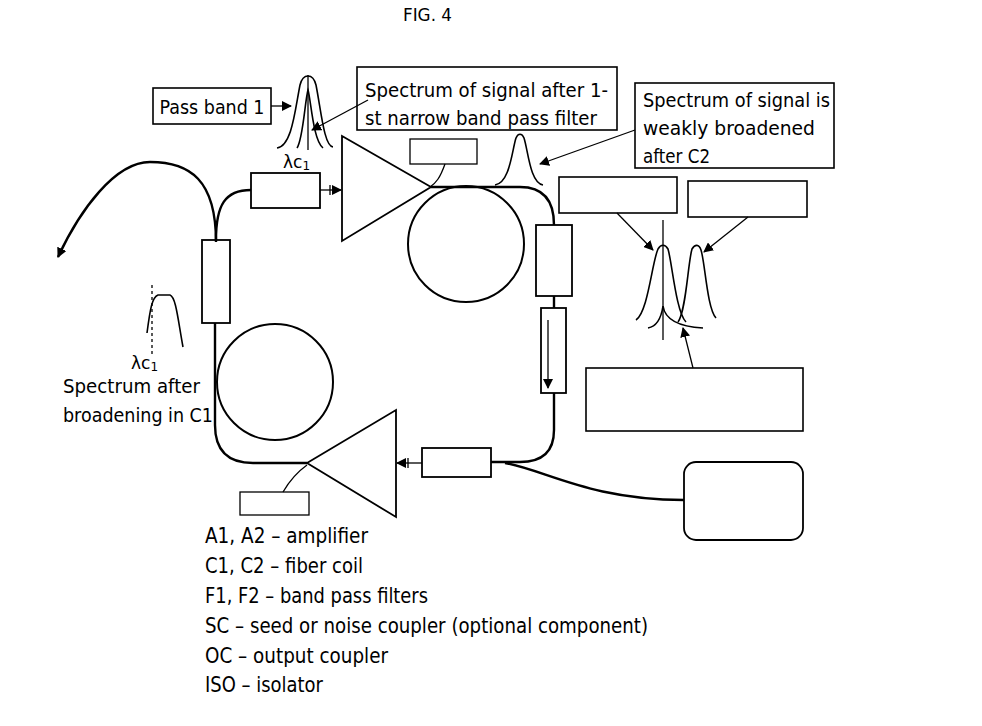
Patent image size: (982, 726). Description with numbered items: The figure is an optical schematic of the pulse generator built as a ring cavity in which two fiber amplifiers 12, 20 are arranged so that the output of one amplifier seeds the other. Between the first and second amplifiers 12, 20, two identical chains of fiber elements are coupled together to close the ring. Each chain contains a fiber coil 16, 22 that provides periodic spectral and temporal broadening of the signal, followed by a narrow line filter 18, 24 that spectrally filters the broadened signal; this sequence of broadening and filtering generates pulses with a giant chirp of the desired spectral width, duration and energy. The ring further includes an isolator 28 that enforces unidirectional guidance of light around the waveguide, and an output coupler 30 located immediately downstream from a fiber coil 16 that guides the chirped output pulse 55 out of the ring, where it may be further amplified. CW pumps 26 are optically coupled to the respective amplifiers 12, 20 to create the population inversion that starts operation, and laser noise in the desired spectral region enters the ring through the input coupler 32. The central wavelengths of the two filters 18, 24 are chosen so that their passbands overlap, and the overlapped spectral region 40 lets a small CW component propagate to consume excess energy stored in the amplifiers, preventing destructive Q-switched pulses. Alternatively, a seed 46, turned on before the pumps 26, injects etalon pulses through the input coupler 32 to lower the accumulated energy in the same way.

The fiber amplifier 12 is at (358, 438).
The fiber coil 16 is at (300, 355).
The narrow line filter 18 is at (312, 197).
The fiber amplifier 20 is at (384, 211).
The fiber coil 22 is at (484, 297).
The narrow line filter 24 is at (560, 273).
The CW pump 26 is at (358, 327).
The isolator 28 is at (545, 383).
The output coupler 30 is at (205, 312).
The input coupler 32 is at (452, 455).
The overlapped spectral region 40 is at (683, 304).
The seed 46 is at (787, 528).
The output pulse 55 is at (130, 205).